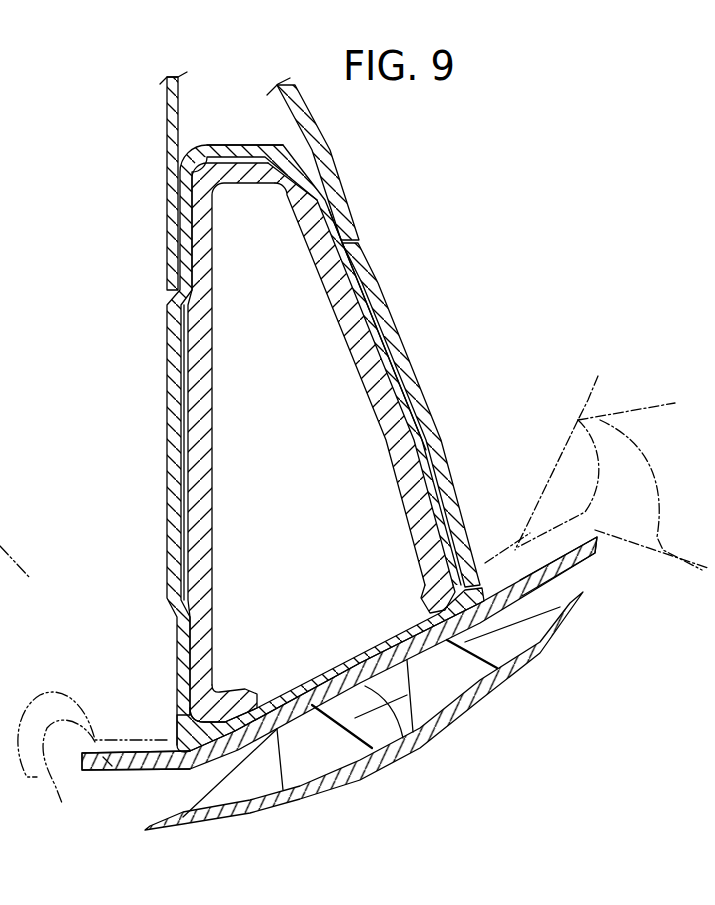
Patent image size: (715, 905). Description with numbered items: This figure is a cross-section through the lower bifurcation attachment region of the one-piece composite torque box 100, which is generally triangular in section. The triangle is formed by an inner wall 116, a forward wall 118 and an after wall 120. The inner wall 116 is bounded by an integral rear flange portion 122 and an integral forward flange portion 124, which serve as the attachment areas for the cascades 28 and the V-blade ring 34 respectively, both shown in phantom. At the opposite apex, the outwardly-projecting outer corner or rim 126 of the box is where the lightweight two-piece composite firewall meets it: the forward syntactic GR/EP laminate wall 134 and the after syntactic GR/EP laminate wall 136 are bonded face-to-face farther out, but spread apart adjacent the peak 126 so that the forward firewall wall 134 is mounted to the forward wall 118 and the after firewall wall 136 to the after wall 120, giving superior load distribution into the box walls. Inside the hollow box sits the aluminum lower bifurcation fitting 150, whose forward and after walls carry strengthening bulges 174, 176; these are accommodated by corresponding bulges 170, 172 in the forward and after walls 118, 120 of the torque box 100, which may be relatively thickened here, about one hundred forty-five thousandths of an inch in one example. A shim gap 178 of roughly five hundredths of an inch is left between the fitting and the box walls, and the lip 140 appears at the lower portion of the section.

The torque box 100 is at (387, 219).
The inner wall 116 is at (400, 740).
The forward wall 118 is at (171, 383).
The after wall 120 is at (390, 337).
The rear flange portion 122 is at (584, 560).
The forward flange portion 124 is at (101, 768).
The outer corner or rim 126 is at (230, 143).
The forward syntactic GR/EP laminate wall 134 is at (166, 122).
The after syntactic GR/EP laminate wall 136 is at (318, 153).
The lip 140 is at (476, 701).
The bifurcation fitting 150 is at (430, 525).
The bulge 170 is at (167, 407).
The bulge 172 is at (376, 316).
The strengthening bulge 174 is at (203, 423).
The strengthening bulge 176 is at (382, 373).
The shim gap 178 is at (188, 606).
The cascades 28 is at (598, 376).
The V-blade ring 34 is at (63, 803).